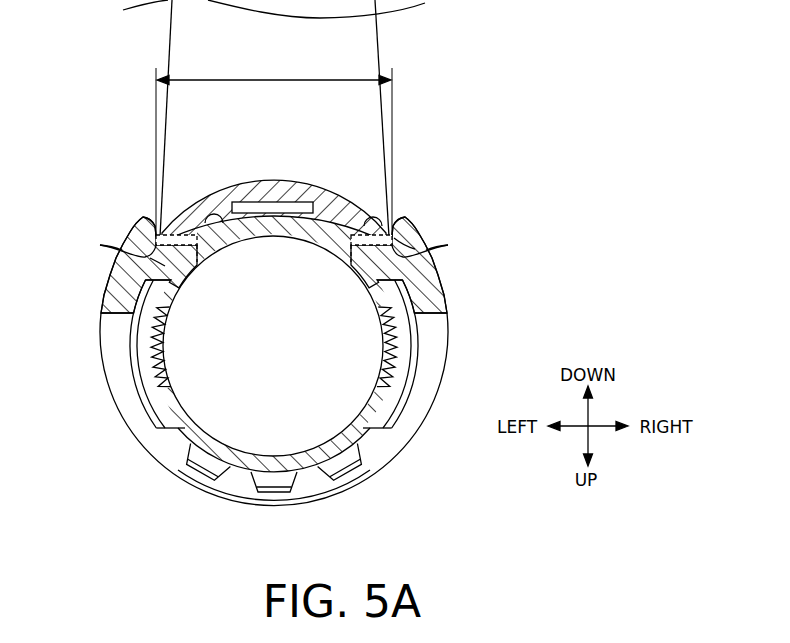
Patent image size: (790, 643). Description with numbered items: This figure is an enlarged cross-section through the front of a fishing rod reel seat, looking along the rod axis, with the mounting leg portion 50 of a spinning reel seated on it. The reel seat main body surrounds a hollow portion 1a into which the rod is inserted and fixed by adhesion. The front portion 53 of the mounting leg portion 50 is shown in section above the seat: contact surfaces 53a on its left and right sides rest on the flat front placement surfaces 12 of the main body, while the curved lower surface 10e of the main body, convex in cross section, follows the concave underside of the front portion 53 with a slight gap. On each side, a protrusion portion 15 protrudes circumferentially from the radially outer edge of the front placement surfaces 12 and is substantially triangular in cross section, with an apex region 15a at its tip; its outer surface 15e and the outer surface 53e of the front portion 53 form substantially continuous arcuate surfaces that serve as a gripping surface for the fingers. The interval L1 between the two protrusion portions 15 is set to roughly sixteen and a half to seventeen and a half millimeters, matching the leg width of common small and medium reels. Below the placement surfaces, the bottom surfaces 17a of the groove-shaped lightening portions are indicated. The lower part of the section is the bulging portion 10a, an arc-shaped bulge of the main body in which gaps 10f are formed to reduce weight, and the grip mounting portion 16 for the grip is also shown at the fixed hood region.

The mounting leg portion 50 is at (397, 42).
The interval L1 is at (274, 145).
The front portion 53 is at (265, 188).
The outer surface 53e is at (297, 200).
The contact surfaces 53a is at (150, 258).
The front placement surfaces 12 is at (177, 212).
The protrusion portions 15 is at (136, 221).
The projection tip 15a is at (150, 224).
The outer surfaces 15e is at (100, 245).
The lower surface 10e is at (224, 236).
The bottom surfaces 17a is at (197, 262).
The gaps 10f is at (139, 367).
The hollow portion 1a is at (191, 381).
The bulging portion 10a is at (378, 452).
The grip mounting portion 16 is at (243, 462).